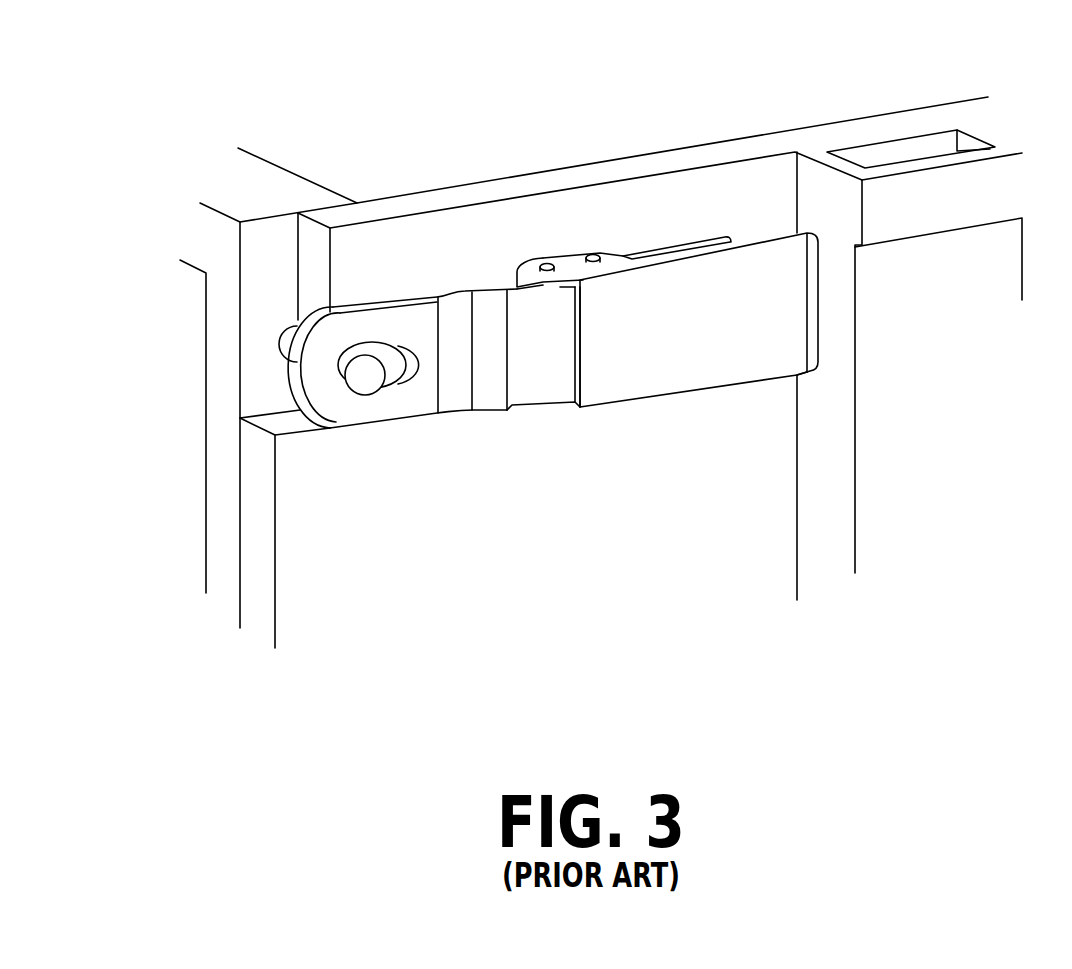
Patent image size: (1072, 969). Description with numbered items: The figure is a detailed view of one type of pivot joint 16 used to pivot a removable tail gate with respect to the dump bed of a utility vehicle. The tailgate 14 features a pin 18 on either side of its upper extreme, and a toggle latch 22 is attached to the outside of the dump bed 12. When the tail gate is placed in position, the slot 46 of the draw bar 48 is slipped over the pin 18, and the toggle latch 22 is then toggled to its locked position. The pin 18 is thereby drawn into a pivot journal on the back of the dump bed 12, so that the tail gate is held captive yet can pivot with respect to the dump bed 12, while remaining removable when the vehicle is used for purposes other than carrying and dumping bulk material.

The dump bed 12 is at (440, 198).
The tailgate 14 is at (242, 190).
The pivot joint 16 is at (381, 459).
The pin 18 is at (363, 368).
The toggle latch 22 is at (692, 328).
The slot 46 is at (387, 343).
The draw bar 48 is at (530, 358).